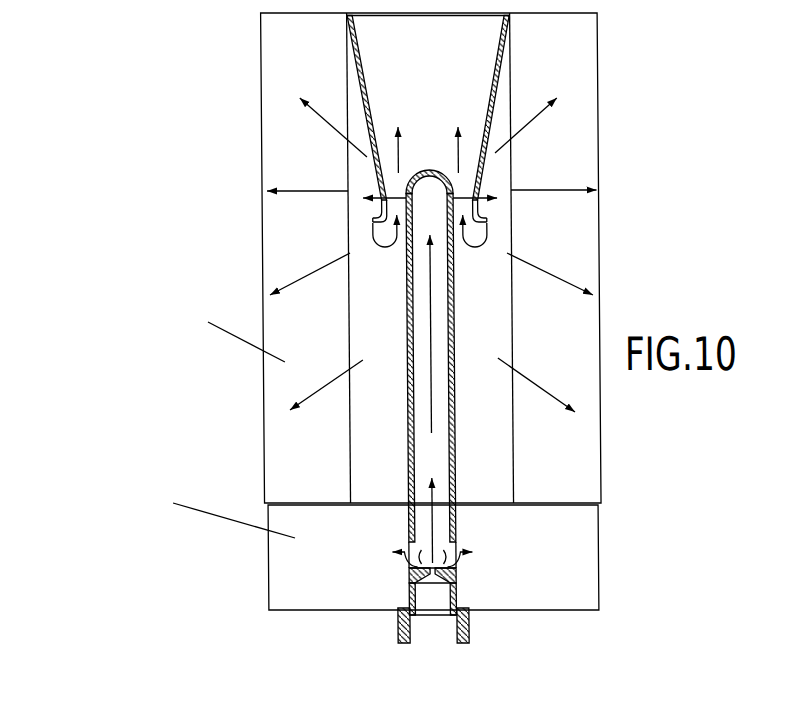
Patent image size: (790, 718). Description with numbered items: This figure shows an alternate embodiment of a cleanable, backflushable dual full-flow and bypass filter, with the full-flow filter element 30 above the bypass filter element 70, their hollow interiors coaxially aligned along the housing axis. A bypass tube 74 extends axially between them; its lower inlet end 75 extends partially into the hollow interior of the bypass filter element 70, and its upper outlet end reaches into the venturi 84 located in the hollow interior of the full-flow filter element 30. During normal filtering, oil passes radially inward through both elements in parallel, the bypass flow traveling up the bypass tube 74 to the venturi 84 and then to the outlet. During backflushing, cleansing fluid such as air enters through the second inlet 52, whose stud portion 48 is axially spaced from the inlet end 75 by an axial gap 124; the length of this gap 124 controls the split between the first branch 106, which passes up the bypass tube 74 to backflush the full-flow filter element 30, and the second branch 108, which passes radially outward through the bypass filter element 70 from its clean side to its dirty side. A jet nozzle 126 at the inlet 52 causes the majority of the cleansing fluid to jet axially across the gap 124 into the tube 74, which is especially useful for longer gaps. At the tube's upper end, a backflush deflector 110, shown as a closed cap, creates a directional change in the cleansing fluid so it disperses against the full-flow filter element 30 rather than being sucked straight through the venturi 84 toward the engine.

The full-flow filter element 30 is at (267, 140).
The venturi 84 is at (496, 100).
The backflush deflector 110 is at (428, 169).
The first backflush branch 106 is at (430, 338).
The bypass tube 74 is at (451, 377).
The axial gap 124 is at (405, 547).
The lower inlet end 75 is at (452, 532).
The second backflush branch 108 is at (405, 560).
The jet nozzle 126 is at (412, 575).
The stud portion 48 is at (448, 575).
The second inlet 52 is at (467, 625).
The bypass filter element 70 is at (273, 565).